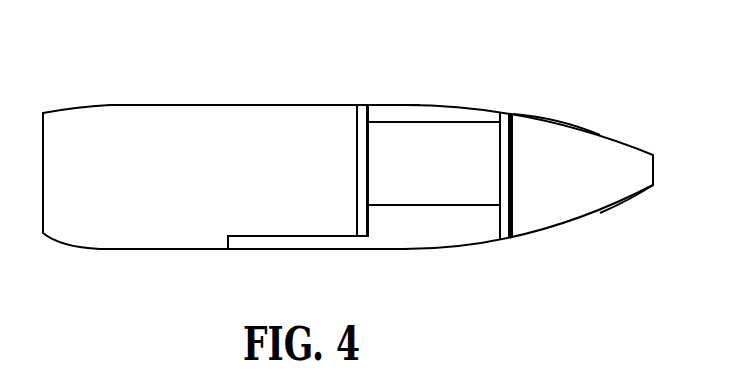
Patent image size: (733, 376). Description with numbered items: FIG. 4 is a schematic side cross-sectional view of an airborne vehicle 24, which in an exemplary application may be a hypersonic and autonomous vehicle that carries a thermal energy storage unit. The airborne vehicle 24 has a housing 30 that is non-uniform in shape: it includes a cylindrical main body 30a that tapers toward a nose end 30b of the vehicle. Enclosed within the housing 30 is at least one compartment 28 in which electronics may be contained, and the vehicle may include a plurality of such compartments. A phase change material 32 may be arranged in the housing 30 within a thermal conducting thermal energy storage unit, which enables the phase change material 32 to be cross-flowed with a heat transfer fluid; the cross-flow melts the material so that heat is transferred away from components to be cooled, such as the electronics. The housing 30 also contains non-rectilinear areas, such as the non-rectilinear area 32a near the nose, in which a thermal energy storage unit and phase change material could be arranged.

The airborne vehicle 24 is at (91, 84).
The compartment 28 is at (292, 113).
The housing 30 is at (425, 104).
The cylindrical main body 30a is at (182, 104).
The nose end 30b is at (628, 182).
The phase change material 32 is at (430, 228).
The non-rectilinear area 32a is at (546, 118).